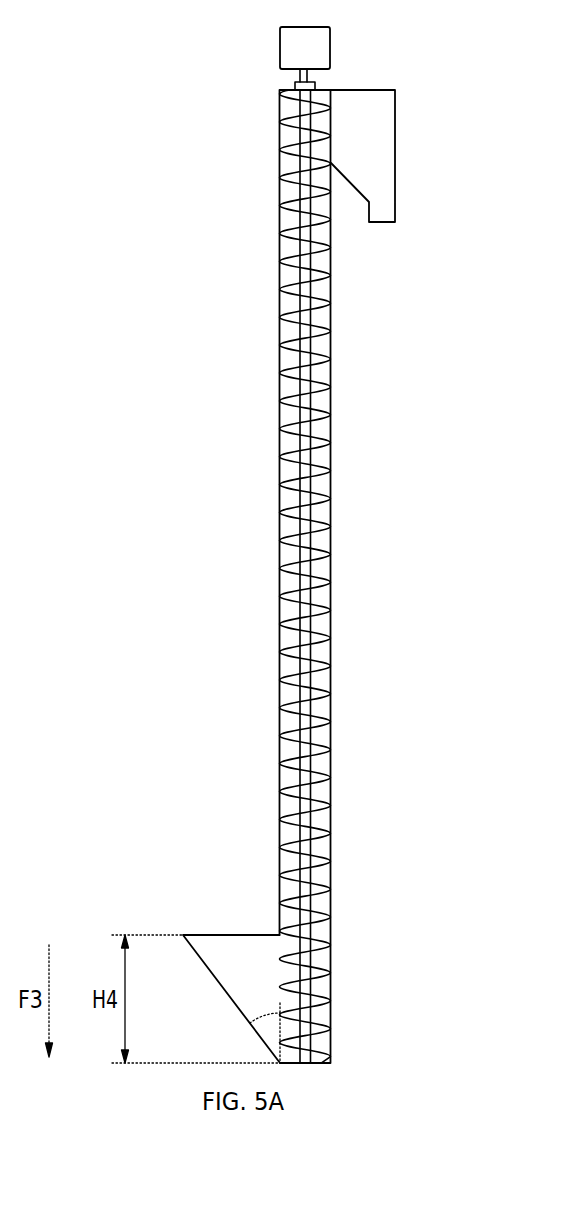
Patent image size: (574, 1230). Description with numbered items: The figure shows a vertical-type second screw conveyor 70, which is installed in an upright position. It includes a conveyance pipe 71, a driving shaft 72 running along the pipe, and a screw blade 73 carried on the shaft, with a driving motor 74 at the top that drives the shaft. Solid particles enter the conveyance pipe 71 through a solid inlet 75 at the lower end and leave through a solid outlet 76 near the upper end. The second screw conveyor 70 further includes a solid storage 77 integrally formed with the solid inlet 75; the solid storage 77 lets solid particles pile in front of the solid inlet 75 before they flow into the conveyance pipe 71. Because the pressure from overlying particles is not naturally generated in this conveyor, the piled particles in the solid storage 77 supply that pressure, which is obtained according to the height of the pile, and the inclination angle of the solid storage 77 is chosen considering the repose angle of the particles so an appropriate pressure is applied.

The second screw conveyor 70 is at (122, 72).
The conveyance pipe 71 is at (279, 370).
The driving shaft 72 is at (279, 308).
The screw blade 73 is at (279, 268).
The driving motor 74 is at (280, 58).
The solid inlet 75 is at (278, 975).
The solid outlet 76 is at (396, 126).
The solid storage 77 is at (217, 955).